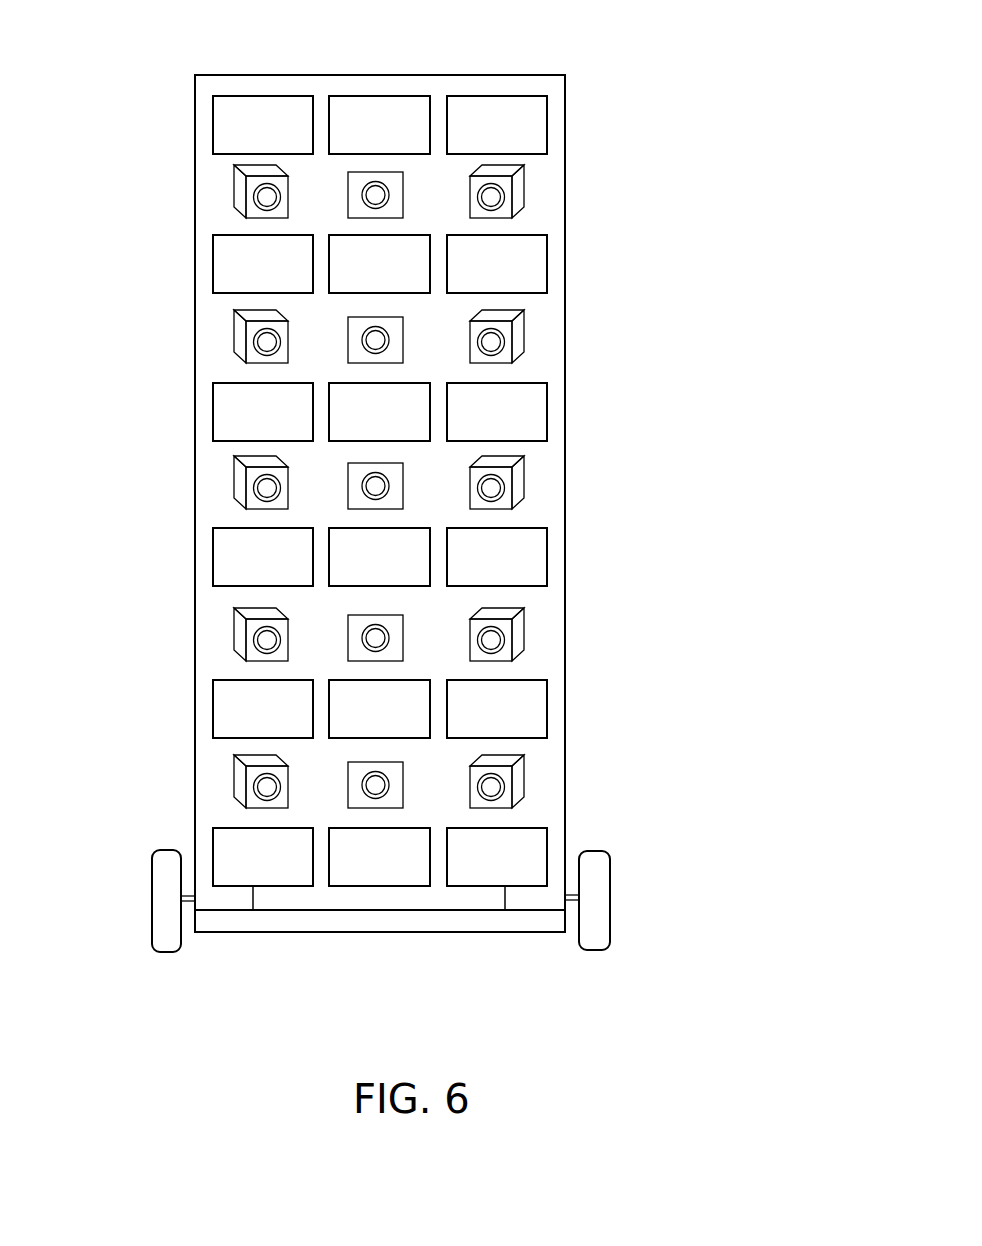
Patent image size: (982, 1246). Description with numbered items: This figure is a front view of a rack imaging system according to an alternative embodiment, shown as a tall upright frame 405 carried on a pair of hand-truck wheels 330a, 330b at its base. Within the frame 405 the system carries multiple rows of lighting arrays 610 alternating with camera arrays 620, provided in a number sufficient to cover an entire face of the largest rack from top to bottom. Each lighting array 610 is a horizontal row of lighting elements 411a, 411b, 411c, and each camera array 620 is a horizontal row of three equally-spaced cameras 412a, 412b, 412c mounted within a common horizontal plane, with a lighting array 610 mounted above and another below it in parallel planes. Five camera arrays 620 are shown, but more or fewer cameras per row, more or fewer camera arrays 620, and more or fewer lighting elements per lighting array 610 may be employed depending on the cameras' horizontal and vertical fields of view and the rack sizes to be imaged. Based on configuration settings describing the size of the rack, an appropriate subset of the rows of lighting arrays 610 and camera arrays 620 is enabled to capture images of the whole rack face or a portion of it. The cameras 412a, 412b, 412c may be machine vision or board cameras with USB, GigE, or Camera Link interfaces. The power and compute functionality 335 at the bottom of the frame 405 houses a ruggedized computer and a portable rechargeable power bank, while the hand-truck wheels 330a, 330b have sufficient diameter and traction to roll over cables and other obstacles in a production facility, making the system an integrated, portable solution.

The panel / mobile platform frame 405 is at (588, 522).
The lighting array 610 is at (520, 444).
The camera array 620 is at (442, 484).
The lighting element 411a is at (263, 112).
The lighting element 411b is at (380, 112).
The lighting element 411c is at (497, 112).
The camera 412a is at (201, 192).
The camera 412b is at (313, 202).
The camera 412c is at (552, 210).
The hand-truck wheel 330a is at (130, 899).
The hand-truck wheel 330b is at (633, 899).
The power and compute functionality 335 is at (392, 933).